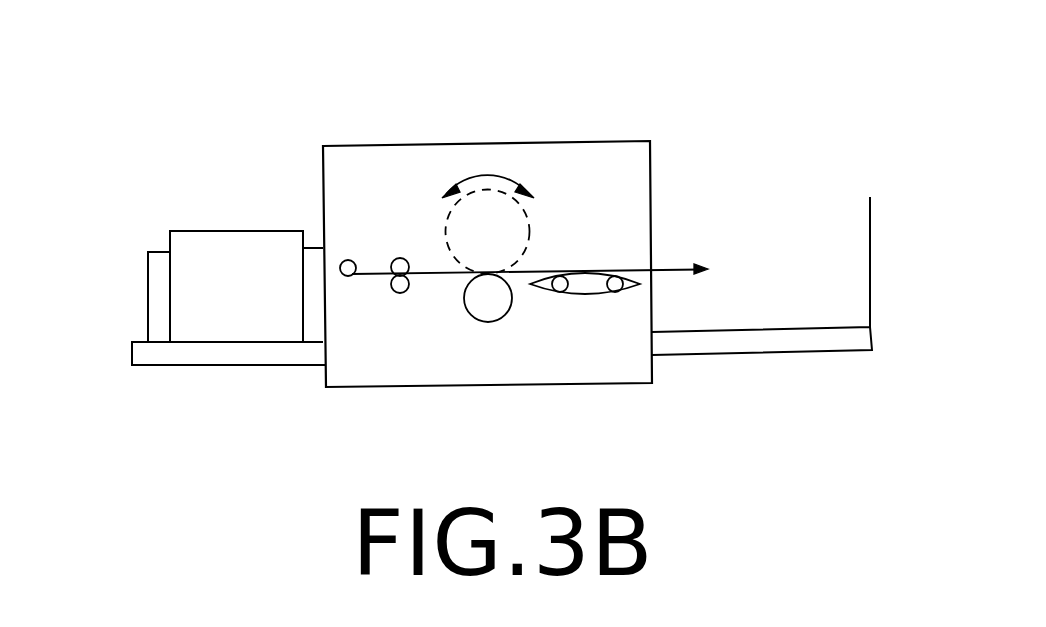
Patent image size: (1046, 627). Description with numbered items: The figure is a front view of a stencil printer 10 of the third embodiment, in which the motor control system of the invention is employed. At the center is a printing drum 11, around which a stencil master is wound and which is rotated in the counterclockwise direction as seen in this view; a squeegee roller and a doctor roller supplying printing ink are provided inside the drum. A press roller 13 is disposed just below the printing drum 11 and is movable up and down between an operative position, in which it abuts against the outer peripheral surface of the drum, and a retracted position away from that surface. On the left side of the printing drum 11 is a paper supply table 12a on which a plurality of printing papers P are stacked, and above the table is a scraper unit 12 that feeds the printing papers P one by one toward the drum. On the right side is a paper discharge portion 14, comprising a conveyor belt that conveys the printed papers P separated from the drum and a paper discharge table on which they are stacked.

The stencil printer 10 is at (590, 122).
The printing drum 11 is at (527, 248).
The scraper unit 12 is at (352, 230).
The paper supply table 12a is at (220, 366).
The press roller 13 is at (498, 320).
The paper discharge portion 14 is at (626, 261).
The printing papers P is at (223, 231).